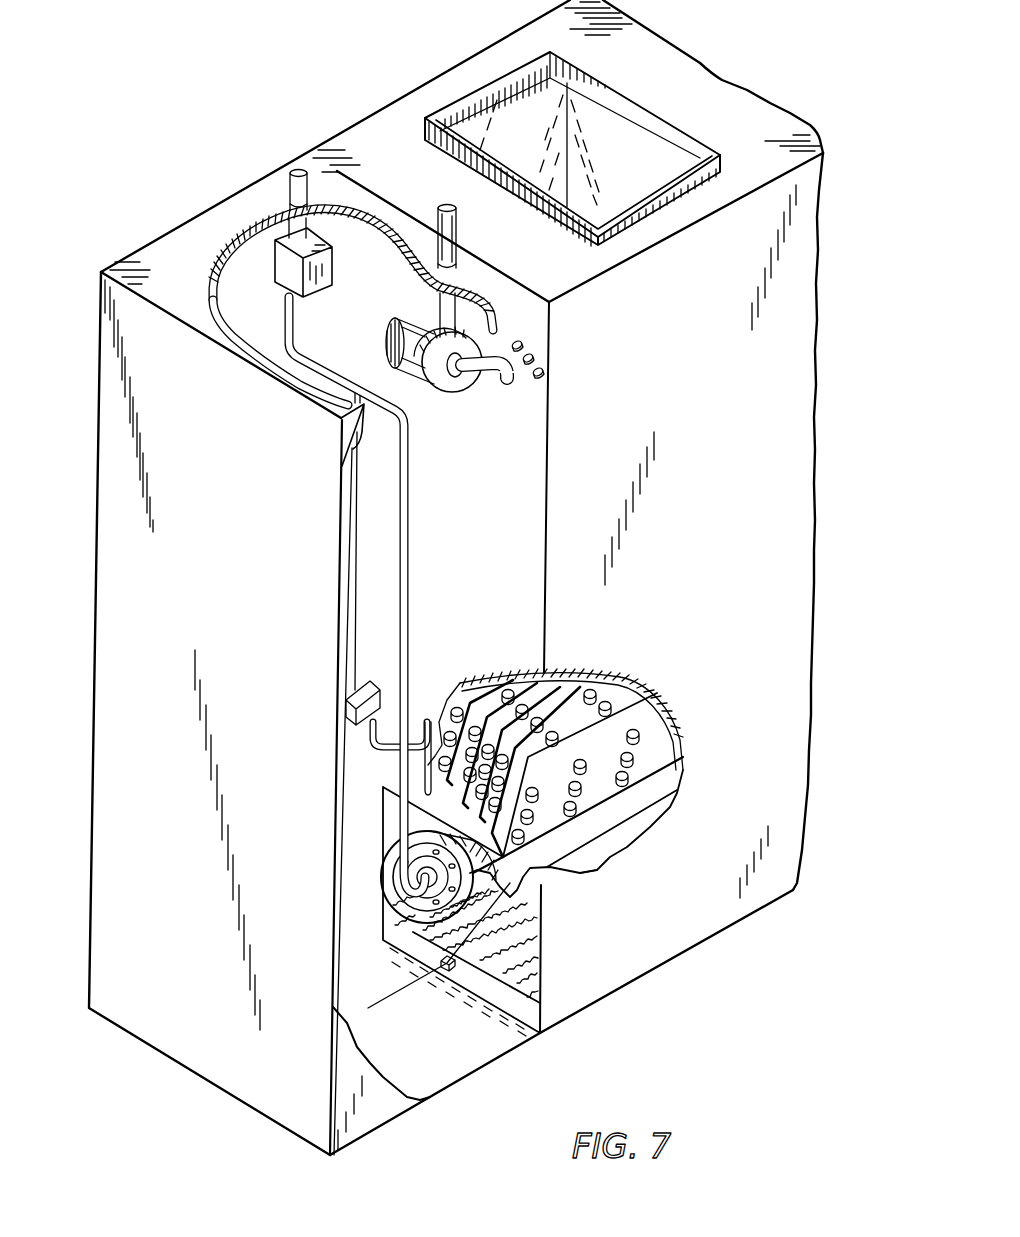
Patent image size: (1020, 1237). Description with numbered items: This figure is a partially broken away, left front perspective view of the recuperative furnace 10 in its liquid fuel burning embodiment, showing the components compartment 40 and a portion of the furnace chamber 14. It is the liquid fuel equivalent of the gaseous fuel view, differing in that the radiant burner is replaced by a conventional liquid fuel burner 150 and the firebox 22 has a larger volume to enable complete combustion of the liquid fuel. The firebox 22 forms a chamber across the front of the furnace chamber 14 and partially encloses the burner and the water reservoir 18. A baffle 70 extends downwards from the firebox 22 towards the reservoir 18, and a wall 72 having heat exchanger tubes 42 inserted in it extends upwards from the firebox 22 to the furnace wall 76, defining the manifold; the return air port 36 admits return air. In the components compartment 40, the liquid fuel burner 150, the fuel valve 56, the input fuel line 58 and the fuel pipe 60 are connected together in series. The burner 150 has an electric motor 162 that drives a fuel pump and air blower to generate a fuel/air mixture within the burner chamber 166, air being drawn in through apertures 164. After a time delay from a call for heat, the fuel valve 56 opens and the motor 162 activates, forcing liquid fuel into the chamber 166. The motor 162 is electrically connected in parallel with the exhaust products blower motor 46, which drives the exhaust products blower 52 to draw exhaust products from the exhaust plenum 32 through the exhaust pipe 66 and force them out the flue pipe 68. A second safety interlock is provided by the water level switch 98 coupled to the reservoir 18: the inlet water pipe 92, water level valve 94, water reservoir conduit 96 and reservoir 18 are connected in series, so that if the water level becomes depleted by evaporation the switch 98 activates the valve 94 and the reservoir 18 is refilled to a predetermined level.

The recuperative furnace 10 is at (702, 50).
The furnace chamber 14 is at (447, 727).
The water reservoir 18 is at (530, 963).
The firebox 22 is at (383, 803).
The exhaust plenum 32 is at (537, 323).
The return air port 36 is at (613, 123).
The components chamber 40 is at (463, 1057).
The heat exchanger tubes 42 is at (547, 372).
The motor 46 is at (397, 330).
The exhaust products blower 52 is at (453, 387).
The fuel valve 56 is at (283, 263).
The input fuel line 58 is at (290, 190).
The fuel pipe 60 is at (407, 483).
The exhaust pipe 66 is at (497, 373).
The flue pipe 68 is at (460, 231).
The baffle 70 is at (667, 780).
The wall 72 is at (657, 710).
The furnace wall 76 is at (735, 413).
The inlet water pipe 92 is at (355, 512).
The water level valve 94 is at (345, 710).
The water reservoir conduit 96 is at (411, 715).
The water level switch 98 is at (453, 969).
The liquid fuel burner 150 is at (413, 926).
The electric motor 162 is at (395, 905).
The apertures 164 is at (412, 903).
The burner chamber 166 is at (597, 871).